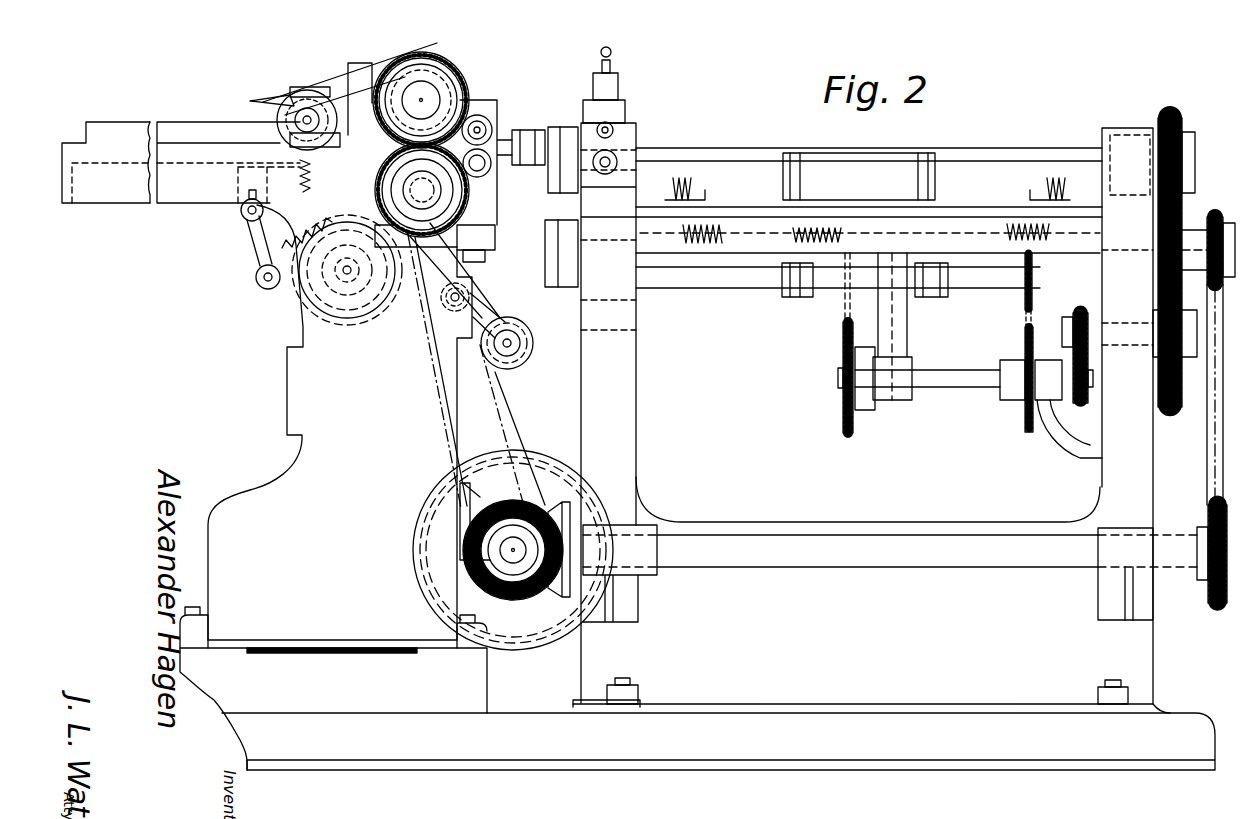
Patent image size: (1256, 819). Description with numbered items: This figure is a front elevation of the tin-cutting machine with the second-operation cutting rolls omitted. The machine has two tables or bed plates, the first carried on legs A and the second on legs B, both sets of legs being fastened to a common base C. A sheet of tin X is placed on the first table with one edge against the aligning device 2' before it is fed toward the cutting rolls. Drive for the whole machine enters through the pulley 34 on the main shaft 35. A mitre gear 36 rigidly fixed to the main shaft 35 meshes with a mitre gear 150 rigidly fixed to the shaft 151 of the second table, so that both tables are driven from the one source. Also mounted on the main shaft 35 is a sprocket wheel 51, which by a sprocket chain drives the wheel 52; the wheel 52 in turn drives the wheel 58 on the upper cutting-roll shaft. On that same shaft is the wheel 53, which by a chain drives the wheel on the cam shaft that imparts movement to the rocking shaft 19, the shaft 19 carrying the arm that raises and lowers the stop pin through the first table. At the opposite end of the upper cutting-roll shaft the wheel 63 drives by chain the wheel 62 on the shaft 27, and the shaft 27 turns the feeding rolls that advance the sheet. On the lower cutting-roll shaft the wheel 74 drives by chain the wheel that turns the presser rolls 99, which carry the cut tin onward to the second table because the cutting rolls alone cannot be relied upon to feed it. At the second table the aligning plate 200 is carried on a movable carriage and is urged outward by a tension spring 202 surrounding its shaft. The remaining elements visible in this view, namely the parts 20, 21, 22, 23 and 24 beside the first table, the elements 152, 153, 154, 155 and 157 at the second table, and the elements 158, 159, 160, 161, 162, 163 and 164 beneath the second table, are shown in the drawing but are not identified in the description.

The aligning device 2' is at (106, 145).
The sheet of tin X is at (191, 143).
The shaft 27 is at (300, 106).
The wheel 62 is at (296, 102).
The wheel 63 is at (417, 60).
The wheel 58 is at (426, 60).
The wheel 52 is at (463, 82).
The wheel 53 is at (483, 110).
The presser rolls 99 is at (505, 128).
The tension spring 202 is at (679, 184).
The aligning plate 200 is at (692, 183).
The gear 155 is at (1170, 118).
The shaft 154 is at (1173, 242).
The gear 153 is at (1250, 214).
The shaft 19 is at (247, 217).
The lever 21 is at (253, 247).
The spring 23 is at (275, 250).
The roller 22 is at (268, 290).
The pulley 20 is at (300, 325).
The gear 24 is at (427, 195).
The wheel 74 is at (483, 326).
The rod 164 is at (842, 303).
The rack 161 is at (1020, 306).
The rod 162 is at (1023, 334).
The bracket 158 is at (1080, 316).
The gear 163 is at (843, 427).
The gear 160 is at (1025, 427).
The gear 159 is at (1082, 408).
The shaft 157 is at (1205, 420).
The legs A is at (601, 377).
The legs B is at (1134, 420).
The mitre gear 150 is at (572, 515).
The pulley 34 is at (420, 538).
The mitre gear 36 is at (477, 582).
The sprocket wheel 51 is at (516, 565).
The main shaft 35 is at (527, 593).
The shaft 151 is at (925, 553).
The gear 152 is at (1212, 606).
The base C is at (796, 744).